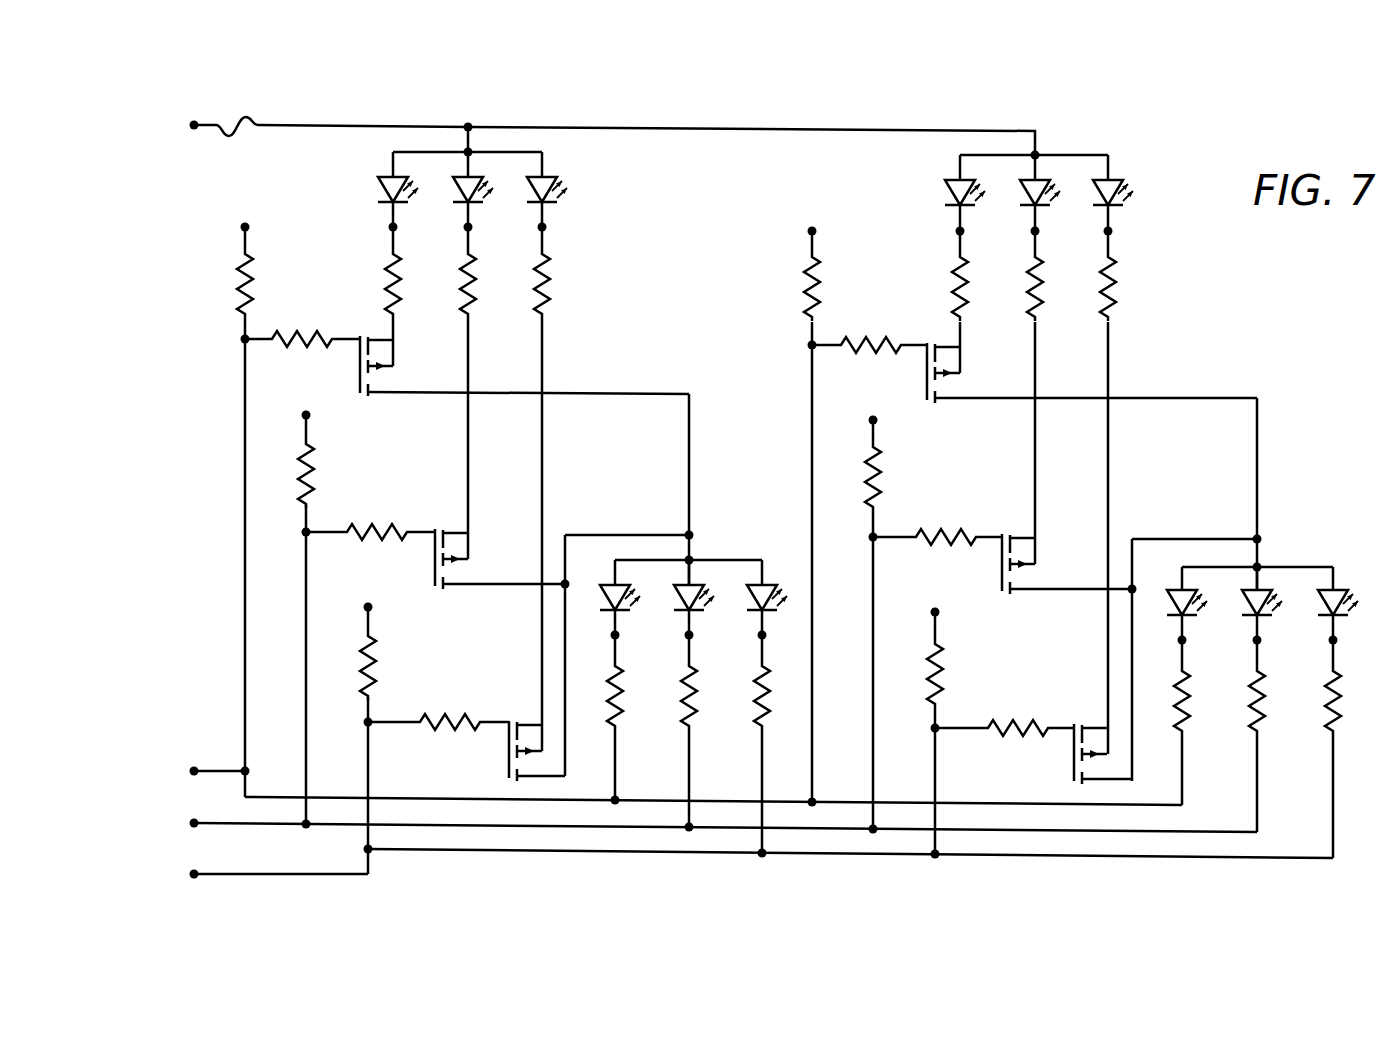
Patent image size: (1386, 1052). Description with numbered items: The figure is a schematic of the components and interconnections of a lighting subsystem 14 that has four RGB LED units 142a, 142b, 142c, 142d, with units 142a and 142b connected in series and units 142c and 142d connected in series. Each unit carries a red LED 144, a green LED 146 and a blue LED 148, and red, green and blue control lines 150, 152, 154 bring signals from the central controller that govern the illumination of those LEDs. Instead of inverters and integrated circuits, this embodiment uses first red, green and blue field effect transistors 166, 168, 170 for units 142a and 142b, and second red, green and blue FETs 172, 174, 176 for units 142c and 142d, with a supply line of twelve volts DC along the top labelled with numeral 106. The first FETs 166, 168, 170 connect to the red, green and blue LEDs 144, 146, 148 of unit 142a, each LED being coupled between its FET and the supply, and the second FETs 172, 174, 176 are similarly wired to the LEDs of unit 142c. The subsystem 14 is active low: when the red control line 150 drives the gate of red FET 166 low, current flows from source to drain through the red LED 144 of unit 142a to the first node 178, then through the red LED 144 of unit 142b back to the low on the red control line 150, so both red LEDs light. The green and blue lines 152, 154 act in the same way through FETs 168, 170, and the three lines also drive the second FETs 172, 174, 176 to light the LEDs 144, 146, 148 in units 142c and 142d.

The lighting subsystem 14 is at (222, 394).
The 12 VDC power supply line 106 is at (194, 129).
The RGB LED unit 142a is at (594, 242).
The RGB LED unit 142b is at (711, 527).
The RGB LED unit 142c is at (1151, 245).
The RGB LED unit 142d is at (1281, 528).
The red LED 144 is at (388, 178).
The green LED 146 is at (464, 175).
The blue LED 148 is at (546, 176).
The red control line 150 is at (188, 772).
The green control line 152 is at (188, 824).
The blue control line 154 is at (188, 875).
The first red FET 166 is at (360, 336).
The first green FET 168 is at (435, 529).
The first blue FET 170 is at (508, 721).
The second red FET 172 is at (926, 343).
The second green FET 174 is at (1000, 534).
The second blue FET 176 is at (1072, 725).
The first node 178 is at (687, 531).